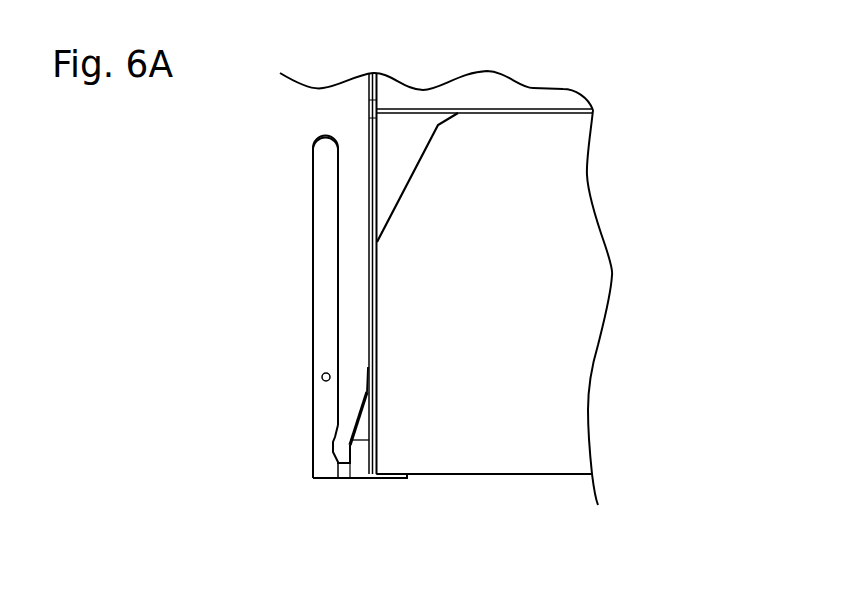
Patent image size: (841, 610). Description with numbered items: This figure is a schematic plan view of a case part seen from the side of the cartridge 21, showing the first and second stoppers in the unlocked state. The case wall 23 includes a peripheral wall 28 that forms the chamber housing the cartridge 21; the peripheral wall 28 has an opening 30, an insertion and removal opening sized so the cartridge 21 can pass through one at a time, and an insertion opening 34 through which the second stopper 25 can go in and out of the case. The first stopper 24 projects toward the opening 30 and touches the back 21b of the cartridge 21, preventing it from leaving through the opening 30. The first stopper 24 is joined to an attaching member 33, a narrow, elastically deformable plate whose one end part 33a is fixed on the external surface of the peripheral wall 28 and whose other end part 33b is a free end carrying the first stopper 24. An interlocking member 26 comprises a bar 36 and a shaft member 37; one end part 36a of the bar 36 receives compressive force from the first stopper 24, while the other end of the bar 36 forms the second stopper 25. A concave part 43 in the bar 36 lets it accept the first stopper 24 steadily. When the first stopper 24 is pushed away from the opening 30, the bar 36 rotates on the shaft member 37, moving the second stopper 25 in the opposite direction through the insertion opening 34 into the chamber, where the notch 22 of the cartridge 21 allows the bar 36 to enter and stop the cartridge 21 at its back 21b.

The cartridge 21 is at (530, 95).
The back of the cartridge 21b is at (537, 476).
The notch 22 is at (408, 145).
The case wall 23 is at (368, 109).
The first stopper 24 is at (363, 480).
The second stopper 25 is at (322, 140).
The interlocking member 26 is at (330, 245).
The peripheral wall 28 is at (368, 88).
The opening 30 is at (462, 485).
The attaching member 33 is at (362, 418).
The one end part of the attaching member 33a is at (370, 373).
The free end part of the attaching member 33b is at (355, 441).
The insertion opening 34 is at (368, 137).
The bar 36 is at (322, 305).
The one end part of the bar 36a is at (327, 480).
The shaft member 37 is at (318, 380).
The concave part 43 is at (333, 453).